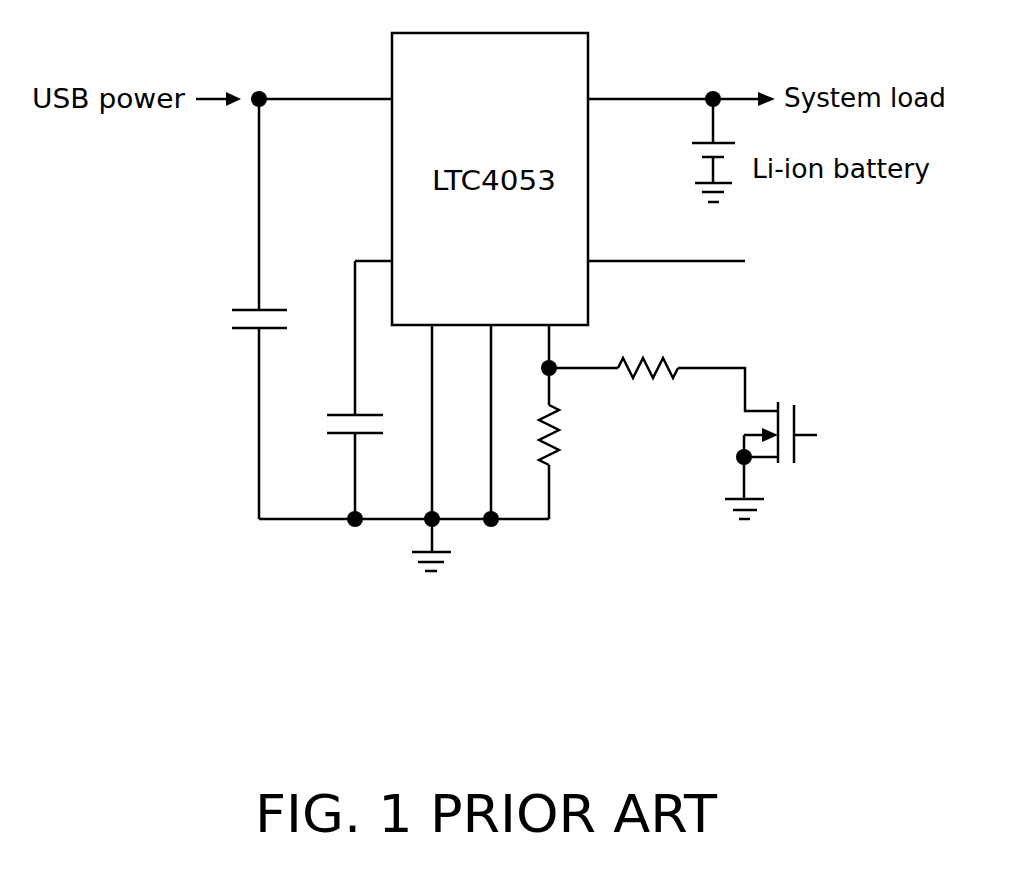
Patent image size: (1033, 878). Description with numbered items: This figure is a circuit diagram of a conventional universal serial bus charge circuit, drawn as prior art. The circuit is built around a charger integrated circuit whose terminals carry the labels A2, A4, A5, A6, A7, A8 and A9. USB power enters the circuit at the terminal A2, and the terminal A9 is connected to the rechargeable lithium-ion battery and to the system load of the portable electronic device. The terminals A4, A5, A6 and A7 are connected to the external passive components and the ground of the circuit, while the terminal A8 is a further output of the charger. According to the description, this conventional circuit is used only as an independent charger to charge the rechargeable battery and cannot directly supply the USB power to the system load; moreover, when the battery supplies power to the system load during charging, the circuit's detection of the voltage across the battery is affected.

The input pin of LTC4053 charger (USB power input) A2 is at (325, 82).
The pin of LTC4053 with capacitor to ground A4 is at (359, 377).
The ground pin of LTC4053 A5 is at (444, 448).
The pin of LTC4053 connected to ground A6 is at (509, 426).
The pin of LTC4053 with program resistor and MOSFET A7 is at (678, 422).
The output pin of LTC4053 A8 is at (666, 244).
The battery/system load output pin of LTC4053 A9 is at (674, 81).